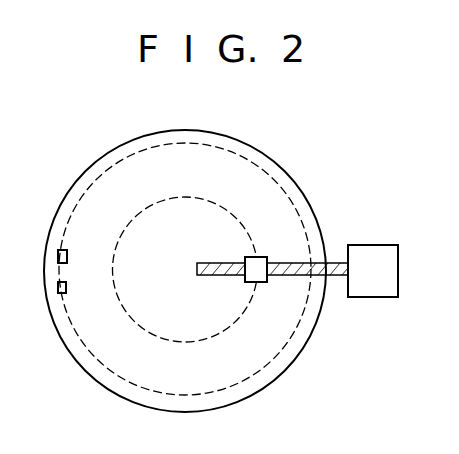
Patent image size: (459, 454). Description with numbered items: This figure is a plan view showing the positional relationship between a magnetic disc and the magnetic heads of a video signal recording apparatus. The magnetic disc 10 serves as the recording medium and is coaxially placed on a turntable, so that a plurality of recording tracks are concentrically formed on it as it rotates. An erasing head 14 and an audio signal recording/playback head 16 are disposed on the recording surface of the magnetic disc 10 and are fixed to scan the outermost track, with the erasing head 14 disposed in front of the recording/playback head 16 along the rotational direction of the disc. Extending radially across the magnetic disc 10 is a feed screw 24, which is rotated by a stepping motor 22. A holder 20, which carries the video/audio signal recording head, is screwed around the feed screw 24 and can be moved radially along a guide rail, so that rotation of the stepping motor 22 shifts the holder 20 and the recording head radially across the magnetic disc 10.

The magnetic disc 10 is at (202, 128).
The erasing head 14 is at (66, 288).
The audio signal recording/playback head 16 is at (67, 255).
The holder 20 is at (259, 257).
The stepping motor 22 is at (368, 245).
The feed screw 24 is at (285, 277).